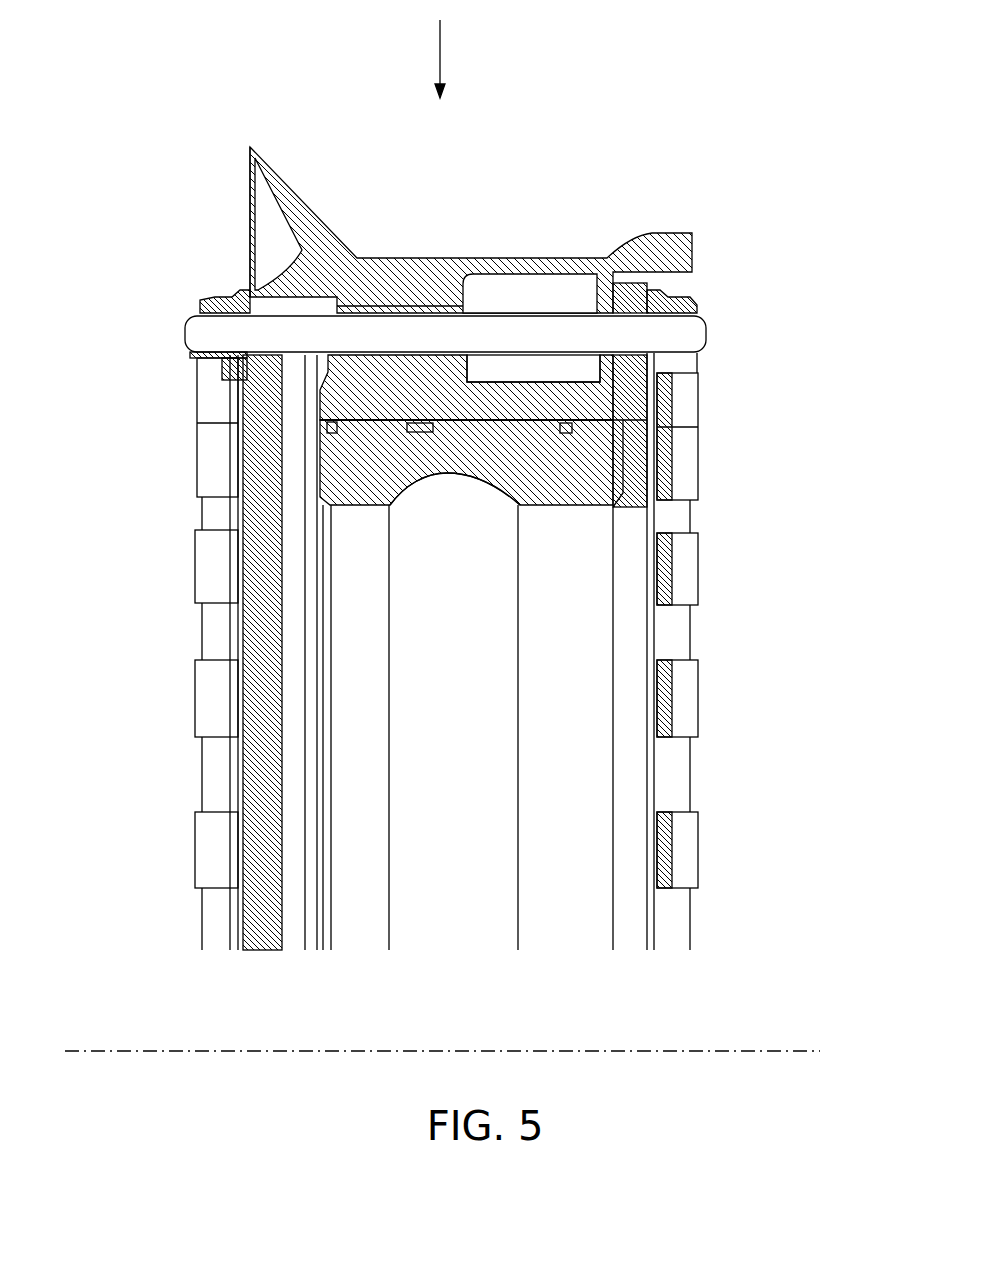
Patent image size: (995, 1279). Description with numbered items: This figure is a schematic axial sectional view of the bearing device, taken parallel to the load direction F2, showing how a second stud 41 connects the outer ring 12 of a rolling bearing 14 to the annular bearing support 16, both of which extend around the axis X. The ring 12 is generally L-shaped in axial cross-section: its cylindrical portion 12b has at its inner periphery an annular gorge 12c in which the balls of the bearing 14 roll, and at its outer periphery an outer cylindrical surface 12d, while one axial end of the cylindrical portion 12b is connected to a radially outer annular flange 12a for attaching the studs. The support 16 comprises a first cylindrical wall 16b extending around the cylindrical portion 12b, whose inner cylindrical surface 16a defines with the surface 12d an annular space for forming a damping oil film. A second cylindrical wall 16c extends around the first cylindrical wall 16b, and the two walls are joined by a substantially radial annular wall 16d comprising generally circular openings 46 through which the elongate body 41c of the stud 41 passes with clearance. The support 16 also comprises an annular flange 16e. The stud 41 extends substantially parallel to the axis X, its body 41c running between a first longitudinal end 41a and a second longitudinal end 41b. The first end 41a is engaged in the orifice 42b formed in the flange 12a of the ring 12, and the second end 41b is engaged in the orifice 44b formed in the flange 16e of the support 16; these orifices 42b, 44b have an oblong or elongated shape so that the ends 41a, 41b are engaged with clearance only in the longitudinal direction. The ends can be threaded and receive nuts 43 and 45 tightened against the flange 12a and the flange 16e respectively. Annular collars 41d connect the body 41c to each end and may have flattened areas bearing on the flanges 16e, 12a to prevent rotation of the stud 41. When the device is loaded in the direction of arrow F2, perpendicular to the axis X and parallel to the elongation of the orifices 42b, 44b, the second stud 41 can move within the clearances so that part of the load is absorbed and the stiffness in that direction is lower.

The outer ring 12 is at (559, 924).
The rolling bearing 14 is at (311, 652).
The radially outer annular flange 12a is at (635, 377).
The cylindrical portion 12b is at (357, 480).
The annular gorge 12c is at (443, 478).
The outer cylindrical surface 12d is at (495, 405).
The annular bearing support 16 is at (311, 192).
The inner cylindrical surface 16a is at (443, 420).
The first cylindrical wall 16b is at (554, 397).
The second cylindrical wall 16c is at (403, 277).
The radial annular wall 16d is at (364, 368).
The annular flange 16e is at (268, 915).
The second stud 41 is at (552, 302).
The first longitudinal end 41a is at (697, 307).
The second longitudinal end 41b is at (200, 293).
The elongate body 41c is at (523, 322).
The annular collar 41d is at (287, 360).
The orifice 42b is at (632, 313).
The nut 43 is at (682, 362).
The orifice 44b is at (261, 292).
The nut 45 is at (200, 365).
The opening 46 is at (383, 306).
The load direction F2 is at (440, 62).
The axis X is at (124, 1050).